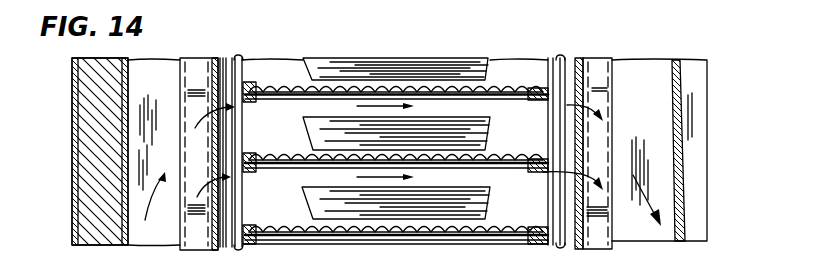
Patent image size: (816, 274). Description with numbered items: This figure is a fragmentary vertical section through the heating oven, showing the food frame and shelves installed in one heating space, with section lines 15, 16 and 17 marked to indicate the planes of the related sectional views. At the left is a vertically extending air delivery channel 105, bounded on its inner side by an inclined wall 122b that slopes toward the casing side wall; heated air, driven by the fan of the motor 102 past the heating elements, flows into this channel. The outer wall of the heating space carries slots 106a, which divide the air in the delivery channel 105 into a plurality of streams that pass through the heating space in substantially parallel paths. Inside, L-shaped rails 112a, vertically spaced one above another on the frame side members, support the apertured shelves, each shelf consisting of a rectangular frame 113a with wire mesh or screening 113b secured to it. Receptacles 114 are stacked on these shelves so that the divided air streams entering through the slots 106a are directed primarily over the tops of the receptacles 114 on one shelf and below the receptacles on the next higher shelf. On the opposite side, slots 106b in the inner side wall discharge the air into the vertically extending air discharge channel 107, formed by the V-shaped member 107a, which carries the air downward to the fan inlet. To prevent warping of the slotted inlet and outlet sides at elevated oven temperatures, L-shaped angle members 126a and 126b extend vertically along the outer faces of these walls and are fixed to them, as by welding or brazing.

The motor 102 is at (395, 122).
The air delivery channels 105 is at (153, 238).
The slots 106a is at (213, 100).
The slots 106b is at (579, 100).
The air discharge channels 107 is at (645, 235).
The V-shaped member 107a is at (681, 163).
The L-shaped rails 112a is at (250, 83).
The frame 113a is at (272, 171).
The wire mesh or screening 113b is at (301, 151).
The receptacles 114 is at (471, 67).
The wall 122b is at (124, 168).
The L-shaped angle member 126a is at (195, 63).
The L-shaped angle member 126b is at (612, 132).
The section line 15 is at (55, 104).
The section line 16 is at (392, 15).
The section line 17 is at (393, 28).